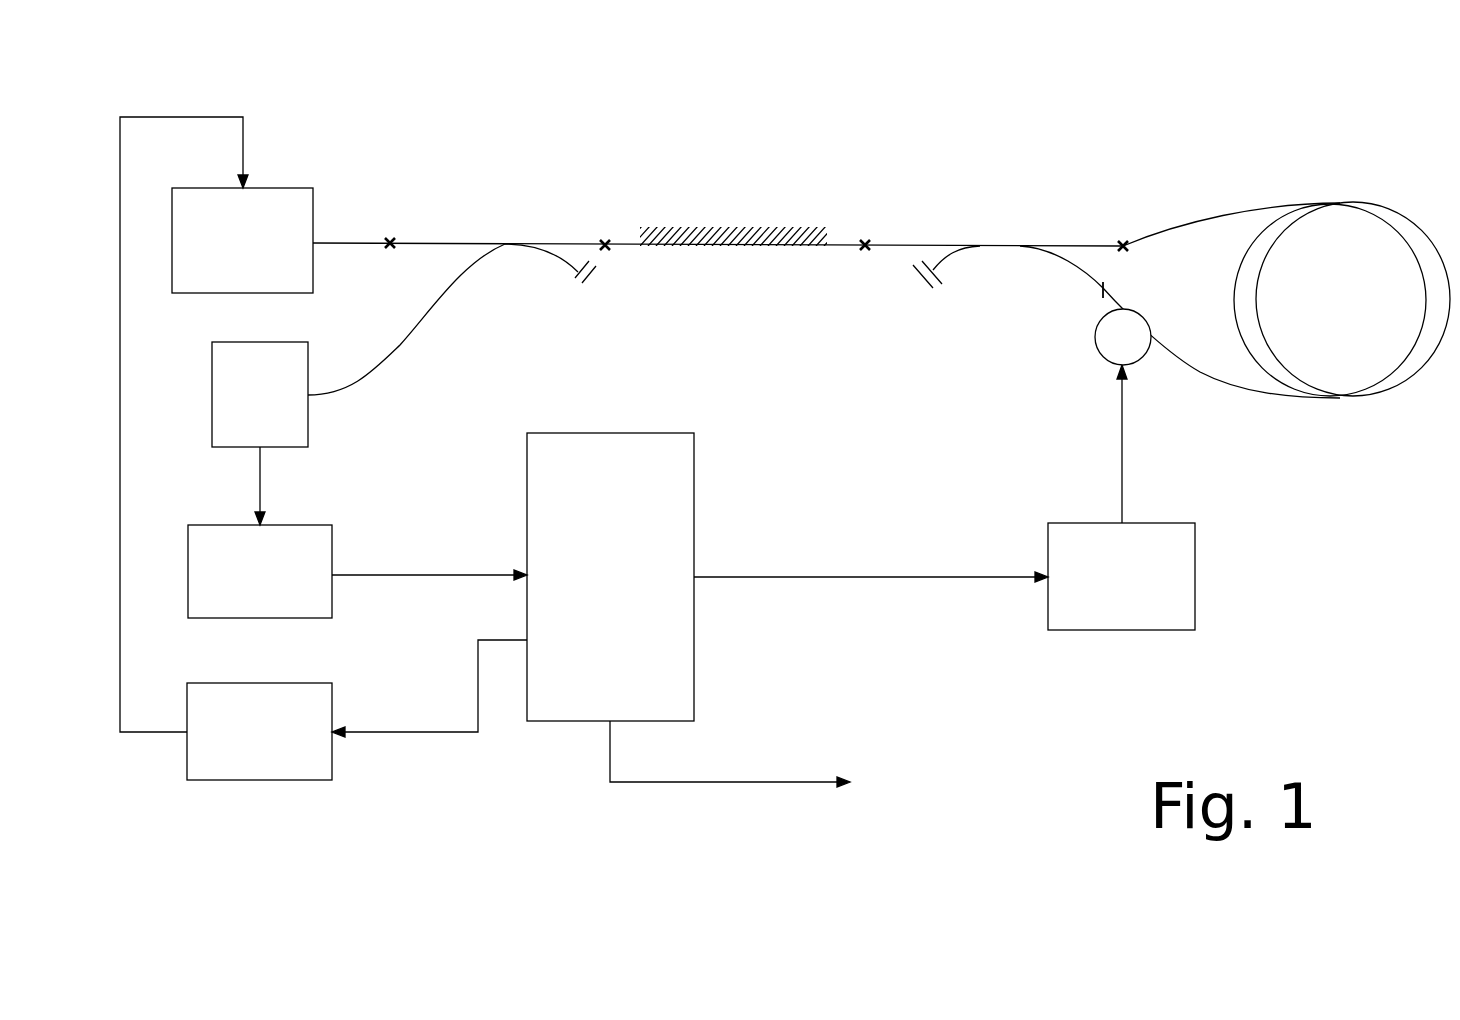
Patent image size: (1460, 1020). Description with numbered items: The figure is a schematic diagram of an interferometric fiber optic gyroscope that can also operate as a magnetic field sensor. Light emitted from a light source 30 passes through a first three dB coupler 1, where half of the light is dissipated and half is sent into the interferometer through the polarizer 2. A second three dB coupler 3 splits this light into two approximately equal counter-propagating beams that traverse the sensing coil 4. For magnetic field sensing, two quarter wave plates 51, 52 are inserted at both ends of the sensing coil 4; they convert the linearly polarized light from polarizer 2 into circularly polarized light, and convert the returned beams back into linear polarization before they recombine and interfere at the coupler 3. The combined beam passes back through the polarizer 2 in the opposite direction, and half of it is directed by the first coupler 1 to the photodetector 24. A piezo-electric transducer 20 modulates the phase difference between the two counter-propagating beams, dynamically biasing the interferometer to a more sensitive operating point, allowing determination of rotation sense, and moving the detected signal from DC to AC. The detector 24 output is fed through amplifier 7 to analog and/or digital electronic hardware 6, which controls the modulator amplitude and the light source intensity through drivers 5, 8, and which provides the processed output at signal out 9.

The first 3 dB coupler 1 is at (503, 242).
The polarizer 2 is at (673, 227).
The second 3 dB coupler 3 is at (963, 246).
The sensing coil 4 is at (1353, 202).
The driver 5 is at (1195, 577).
The analog and/or digital electronic hardware 6 is at (613, 433).
The amplifier 7 is at (332, 603).
The driver 8 is at (228, 780).
The signal output 9 is at (811, 782).
The piezo-electric transducer (PZT) 20 is at (1095, 337).
The photodetector 24 is at (308, 425).
The light source 30 is at (262, 188).
The quarter wave plate 51 is at (1120, 240).
The quarter wave plate 52 is at (1127, 290).